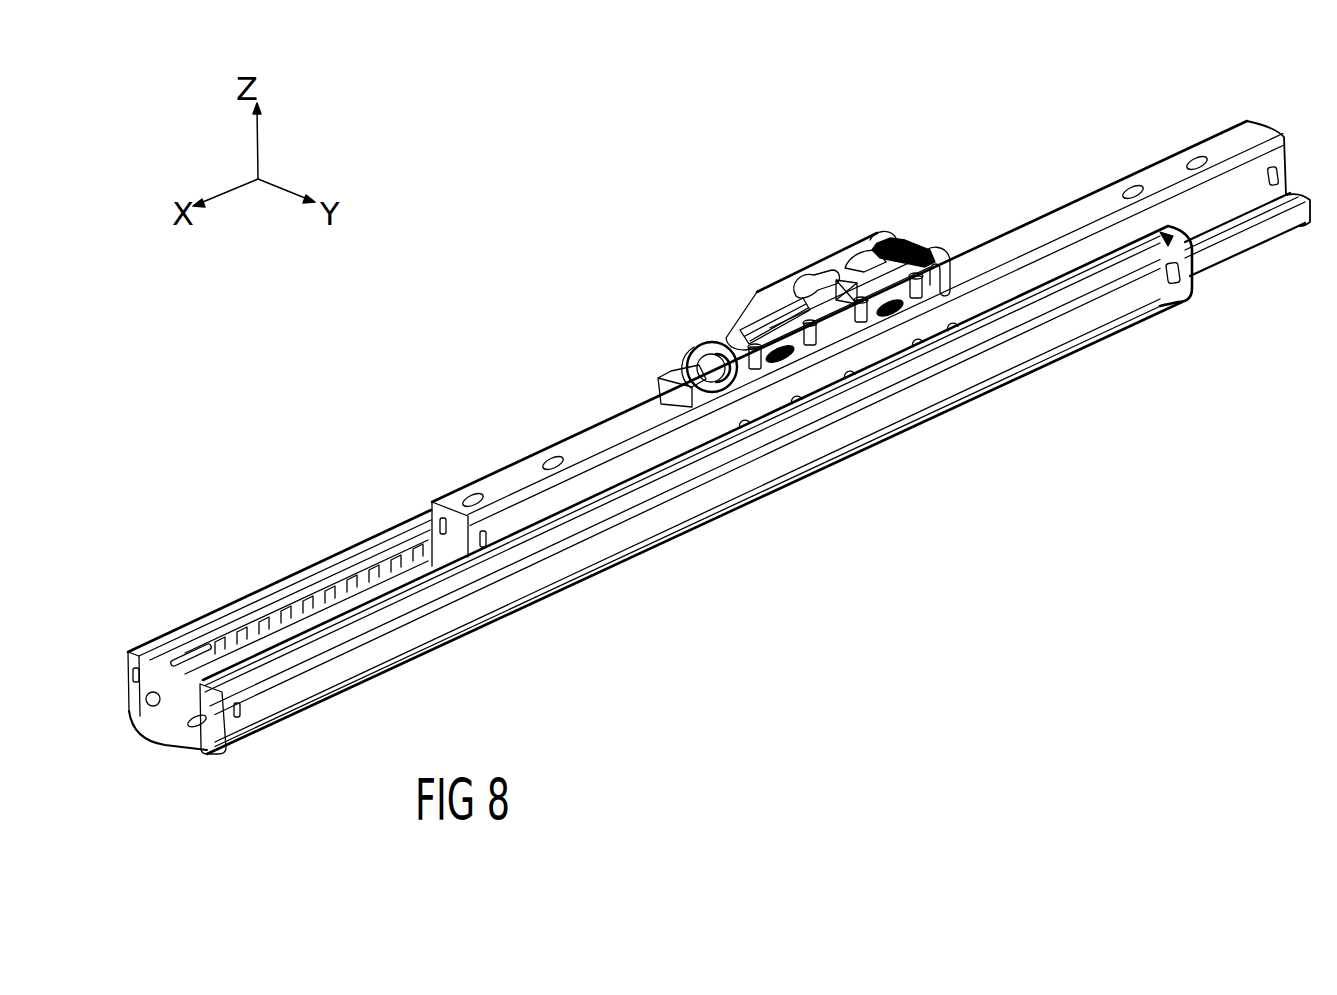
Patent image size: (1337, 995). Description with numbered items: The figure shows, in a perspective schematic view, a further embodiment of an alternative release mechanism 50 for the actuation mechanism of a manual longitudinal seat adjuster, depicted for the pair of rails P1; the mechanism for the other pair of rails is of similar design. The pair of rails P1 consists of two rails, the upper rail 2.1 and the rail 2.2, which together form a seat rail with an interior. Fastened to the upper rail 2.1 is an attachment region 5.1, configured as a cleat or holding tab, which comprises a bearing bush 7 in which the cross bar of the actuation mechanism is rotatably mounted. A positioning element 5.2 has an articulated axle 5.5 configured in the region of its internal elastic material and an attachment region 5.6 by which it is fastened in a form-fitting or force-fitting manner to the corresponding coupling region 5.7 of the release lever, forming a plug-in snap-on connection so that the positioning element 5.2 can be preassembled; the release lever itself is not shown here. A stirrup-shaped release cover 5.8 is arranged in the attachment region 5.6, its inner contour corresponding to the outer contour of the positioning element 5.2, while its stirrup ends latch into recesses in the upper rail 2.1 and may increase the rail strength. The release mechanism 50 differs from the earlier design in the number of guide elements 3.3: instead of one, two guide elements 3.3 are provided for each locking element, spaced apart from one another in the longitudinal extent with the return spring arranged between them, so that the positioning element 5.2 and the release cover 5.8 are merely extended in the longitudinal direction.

The upper rail 2.1 is at (1165, 185).
The rail 2.2 is at (1100, 308).
The guide element 3.3 is at (812, 345).
The attachment region 5.1 is at (652, 348).
The positioning element 5.2 is at (918, 262).
The articulated axle 5.5 is at (863, 246).
The attachment region 5.6 is at (830, 280).
The coupling region 5.7 is at (767, 290).
The release cover 5.8 is at (878, 238).
The bearing bush 7 is at (686, 360).
The release mechanism 50 is at (762, 330).
The pair of rails P1 is at (412, 432).